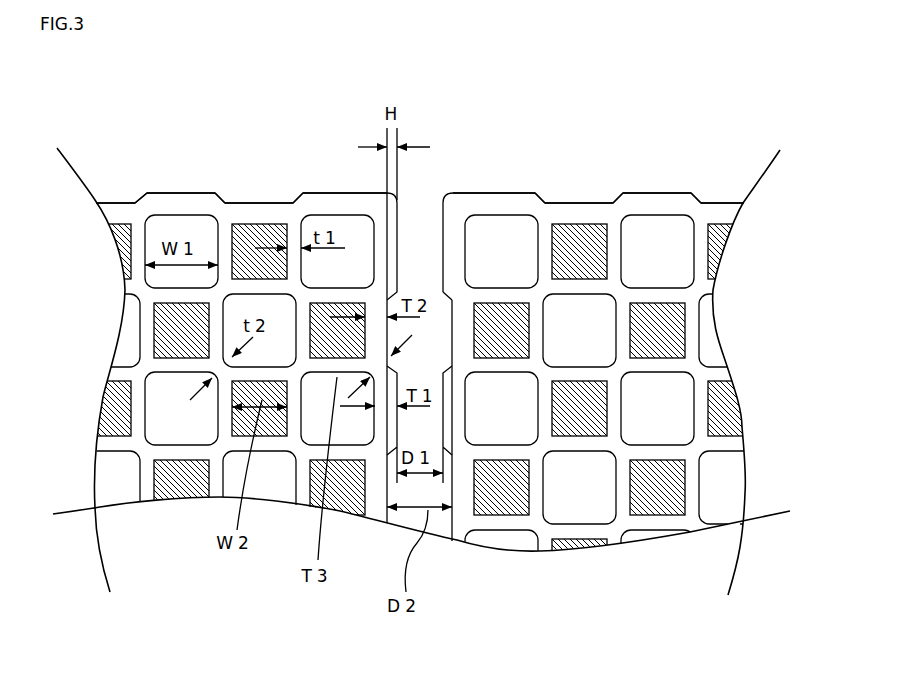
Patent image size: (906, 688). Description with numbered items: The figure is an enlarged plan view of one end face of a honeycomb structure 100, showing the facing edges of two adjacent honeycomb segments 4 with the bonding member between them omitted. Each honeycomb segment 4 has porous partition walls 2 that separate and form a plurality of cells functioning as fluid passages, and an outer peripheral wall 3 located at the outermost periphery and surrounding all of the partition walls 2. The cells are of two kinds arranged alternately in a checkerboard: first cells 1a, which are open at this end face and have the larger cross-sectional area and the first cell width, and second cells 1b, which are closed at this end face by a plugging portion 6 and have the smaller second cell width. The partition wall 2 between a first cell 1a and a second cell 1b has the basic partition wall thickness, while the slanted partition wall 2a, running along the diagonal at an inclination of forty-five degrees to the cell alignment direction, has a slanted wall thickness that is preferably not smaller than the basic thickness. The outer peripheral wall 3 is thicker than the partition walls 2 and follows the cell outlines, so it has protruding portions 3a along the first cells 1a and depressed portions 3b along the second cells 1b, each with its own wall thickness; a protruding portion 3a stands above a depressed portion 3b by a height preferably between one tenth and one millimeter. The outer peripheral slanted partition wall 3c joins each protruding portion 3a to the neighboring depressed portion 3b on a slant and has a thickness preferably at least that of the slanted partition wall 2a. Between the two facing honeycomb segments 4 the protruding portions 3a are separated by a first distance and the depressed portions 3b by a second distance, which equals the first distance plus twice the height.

The honeycomb structure 100 is at (738, 58).
The first cell 1a is at (655, 240).
The second cell 1b is at (578, 240).
The partition wall 2 is at (217, 240).
The slanted partition wall 2a is at (150, 377).
The outer peripheral wall 3 is at (677, 192).
The protruding portion 3a is at (328, 193).
The depressed portion 3b is at (255, 202).
The outer peripheral slanted partition wall 3c is at (290, 193).
The honeycomb segment 4 is at (152, 189).
The plugging portion 6 is at (658, 490).